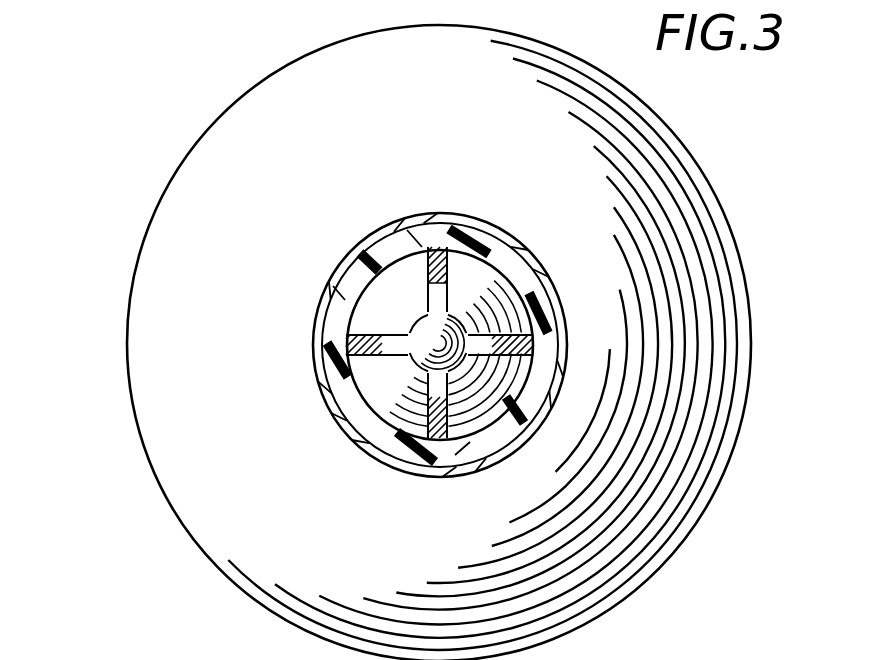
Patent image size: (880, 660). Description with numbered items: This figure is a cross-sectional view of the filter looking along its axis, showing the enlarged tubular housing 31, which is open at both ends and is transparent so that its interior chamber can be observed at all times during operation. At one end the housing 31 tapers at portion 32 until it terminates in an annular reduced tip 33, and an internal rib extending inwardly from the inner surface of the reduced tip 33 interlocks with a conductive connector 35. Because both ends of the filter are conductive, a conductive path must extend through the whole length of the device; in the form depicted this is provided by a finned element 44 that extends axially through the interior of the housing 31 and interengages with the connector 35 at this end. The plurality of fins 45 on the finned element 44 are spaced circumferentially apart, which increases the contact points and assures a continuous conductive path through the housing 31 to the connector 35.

The tubular housing 31 is at (733, 246).
The tapered portion 32 is at (538, 475).
The annular reduced tip 33 is at (560, 312).
The conductive connector 35 is at (530, 293).
The finned element 44 is at (380, 306).
The fins 45 is at (447, 280).